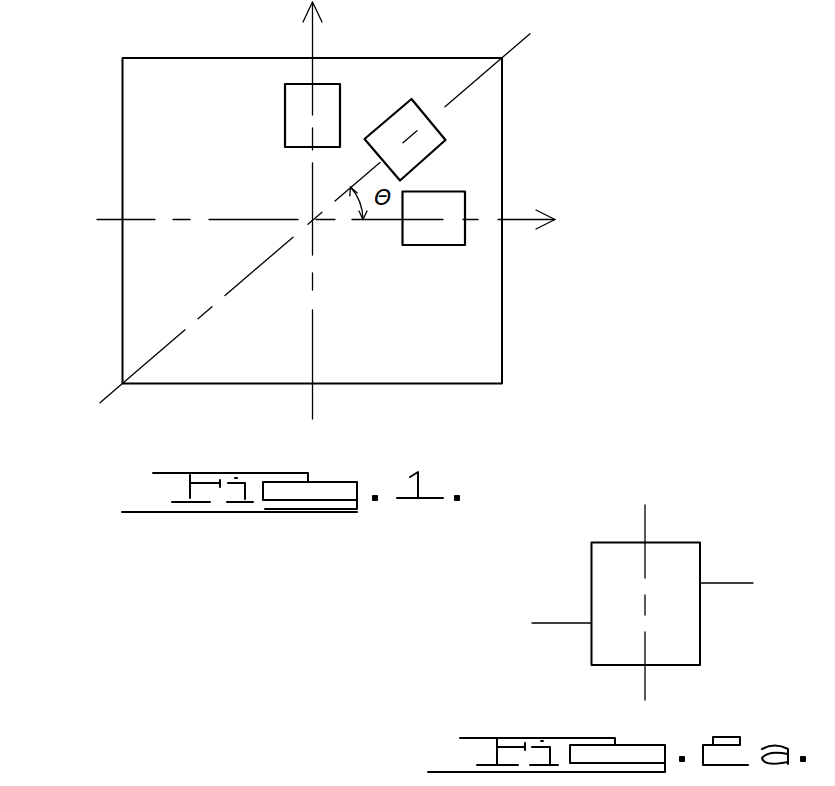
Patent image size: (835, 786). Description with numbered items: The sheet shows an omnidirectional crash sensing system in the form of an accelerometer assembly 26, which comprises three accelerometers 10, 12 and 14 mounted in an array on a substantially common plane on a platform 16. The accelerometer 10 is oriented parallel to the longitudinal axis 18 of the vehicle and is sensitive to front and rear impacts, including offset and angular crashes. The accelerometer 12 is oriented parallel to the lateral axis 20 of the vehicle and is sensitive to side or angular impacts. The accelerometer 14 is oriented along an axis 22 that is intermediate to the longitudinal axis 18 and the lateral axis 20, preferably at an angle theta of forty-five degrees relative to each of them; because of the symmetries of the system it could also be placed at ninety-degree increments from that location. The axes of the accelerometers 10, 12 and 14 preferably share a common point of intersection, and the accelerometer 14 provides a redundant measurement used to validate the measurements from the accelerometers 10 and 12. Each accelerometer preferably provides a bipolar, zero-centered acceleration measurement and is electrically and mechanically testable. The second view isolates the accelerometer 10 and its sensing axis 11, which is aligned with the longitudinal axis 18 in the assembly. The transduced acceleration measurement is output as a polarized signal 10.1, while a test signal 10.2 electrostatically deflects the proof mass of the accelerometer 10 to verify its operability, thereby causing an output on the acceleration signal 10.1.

In FIG. 1, the accelerometer 10 is at (285, 117).
In FIG. 2A, the accelerometer 10 is at (700, 658).
In FIG. 1, the accelerometer 12 is at (412, 245).
In FIG. 1, the accelerometer 14 is at (445, 133).
In FIG. 1, the platform 16 is at (502, 340).
In FIG. 1, the longitudinal axis 18 is at (313, 38).
In FIG. 1, the lateral axis 20 is at (518, 220).
In FIG. 1, the axis 22 is at (522, 36).
In FIG. 1, the accelerometer assembly 26 is at (92, 87).
In FIG. 2A, the sensing axis 11 is at (645, 519).
In FIG. 2A, the polarized signal 10.1 is at (534, 623).
In FIG. 2A, the test signal 10.2 is at (743, 580).